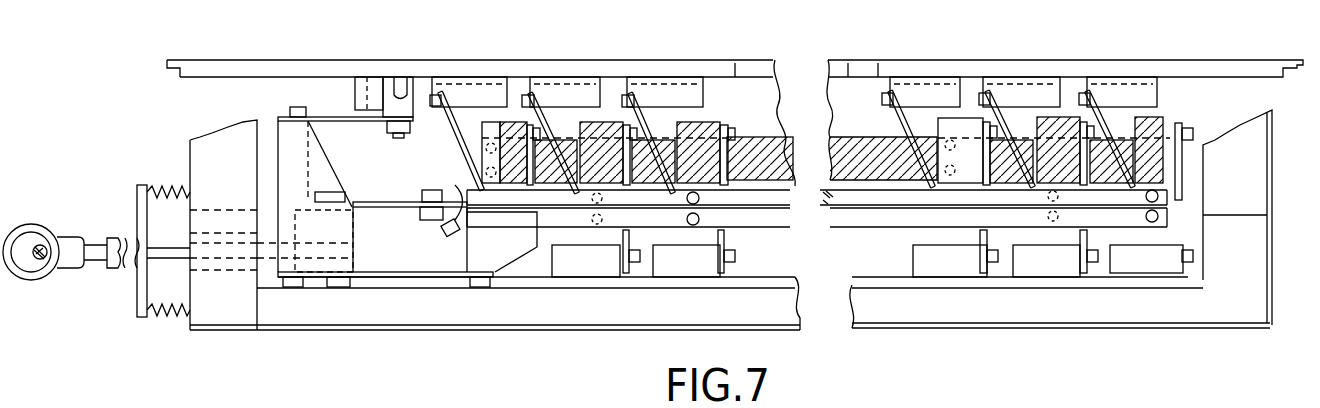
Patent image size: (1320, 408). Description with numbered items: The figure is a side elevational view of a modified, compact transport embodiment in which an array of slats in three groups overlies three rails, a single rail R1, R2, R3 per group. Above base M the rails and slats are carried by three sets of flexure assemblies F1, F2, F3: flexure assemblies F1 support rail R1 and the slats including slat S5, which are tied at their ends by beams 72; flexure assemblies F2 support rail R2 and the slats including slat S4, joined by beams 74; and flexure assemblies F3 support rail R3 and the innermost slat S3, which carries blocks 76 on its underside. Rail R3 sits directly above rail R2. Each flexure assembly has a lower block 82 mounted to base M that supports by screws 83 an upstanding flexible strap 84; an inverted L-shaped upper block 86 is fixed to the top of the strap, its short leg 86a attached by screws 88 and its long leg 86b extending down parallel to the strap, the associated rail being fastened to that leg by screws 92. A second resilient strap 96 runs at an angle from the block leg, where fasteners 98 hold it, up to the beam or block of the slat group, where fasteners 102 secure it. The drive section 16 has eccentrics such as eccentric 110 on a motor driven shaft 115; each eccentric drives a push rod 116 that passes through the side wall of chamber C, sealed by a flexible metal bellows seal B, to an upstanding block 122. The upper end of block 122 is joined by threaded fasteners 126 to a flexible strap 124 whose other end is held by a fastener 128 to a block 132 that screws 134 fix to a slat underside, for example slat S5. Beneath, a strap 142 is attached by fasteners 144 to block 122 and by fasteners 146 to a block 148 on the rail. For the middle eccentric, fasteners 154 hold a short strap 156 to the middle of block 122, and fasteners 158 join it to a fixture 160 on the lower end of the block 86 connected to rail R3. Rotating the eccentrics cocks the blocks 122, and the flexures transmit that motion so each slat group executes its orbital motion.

The drive section 16 is at (40, 202).
The eccentric 110 is at (35, 272).
The motor driven shaft 115 is at (47, 245).
The push rod 116 is at (100, 262).
The flexible metal bellows seal B is at (148, 317).
The chamber C is at (190, 158).
The base M is at (286, 330).
The slat S5 is at (238, 65).
The slat S4 is at (736, 63).
The slat S3 is at (803, 101).
The flexible resilient strap 124 is at (323, 117).
The threaded fastener 126 is at (280, 111).
The block 132 is at (378, 77).
The screw 134 is at (407, 77).
The fastener 128 is at (405, 138).
The upstanding block 122 is at (322, 152).
The strap 142 is at (385, 280).
The fastener 144 is at (300, 288).
The fastener 146 is at (480, 288).
The fastener 154 is at (347, 191).
The flexible strap 156 is at (390, 208).
The fastener 158 is at (426, 196).
The fixture 160 is at (457, 192).
The fastener 98 is at (447, 229).
The block 148 is at (480, 259).
The block 76 is at (458, 92).
The beam 74 is at (548, 93).
The beam 72 is at (652, 95).
The fastener 102 is at (622, 93).
The flexible resilient strap 96 is at (447, 122).
The inverted L-shaped upper block 86 is at (1152, 135).
The short leg 86a is at (720, 122).
The long leg 86b is at (1147, 230).
The screw 88 is at (1195, 135).
The flexible resilient strap 84 is at (723, 238).
The screw 83 is at (735, 260).
The lower block 82 is at (585, 278).
The screw 92 is at (1160, 214).
The rail R1 is at (898, 228).
The rail R2 is at (817, 223).
The rail R3 is at (832, 140).
The flexure assembly F1 is at (696, 291).
The flexure assembly F2 is at (592, 291).
The flexure assembly F3 is at (512, 290).